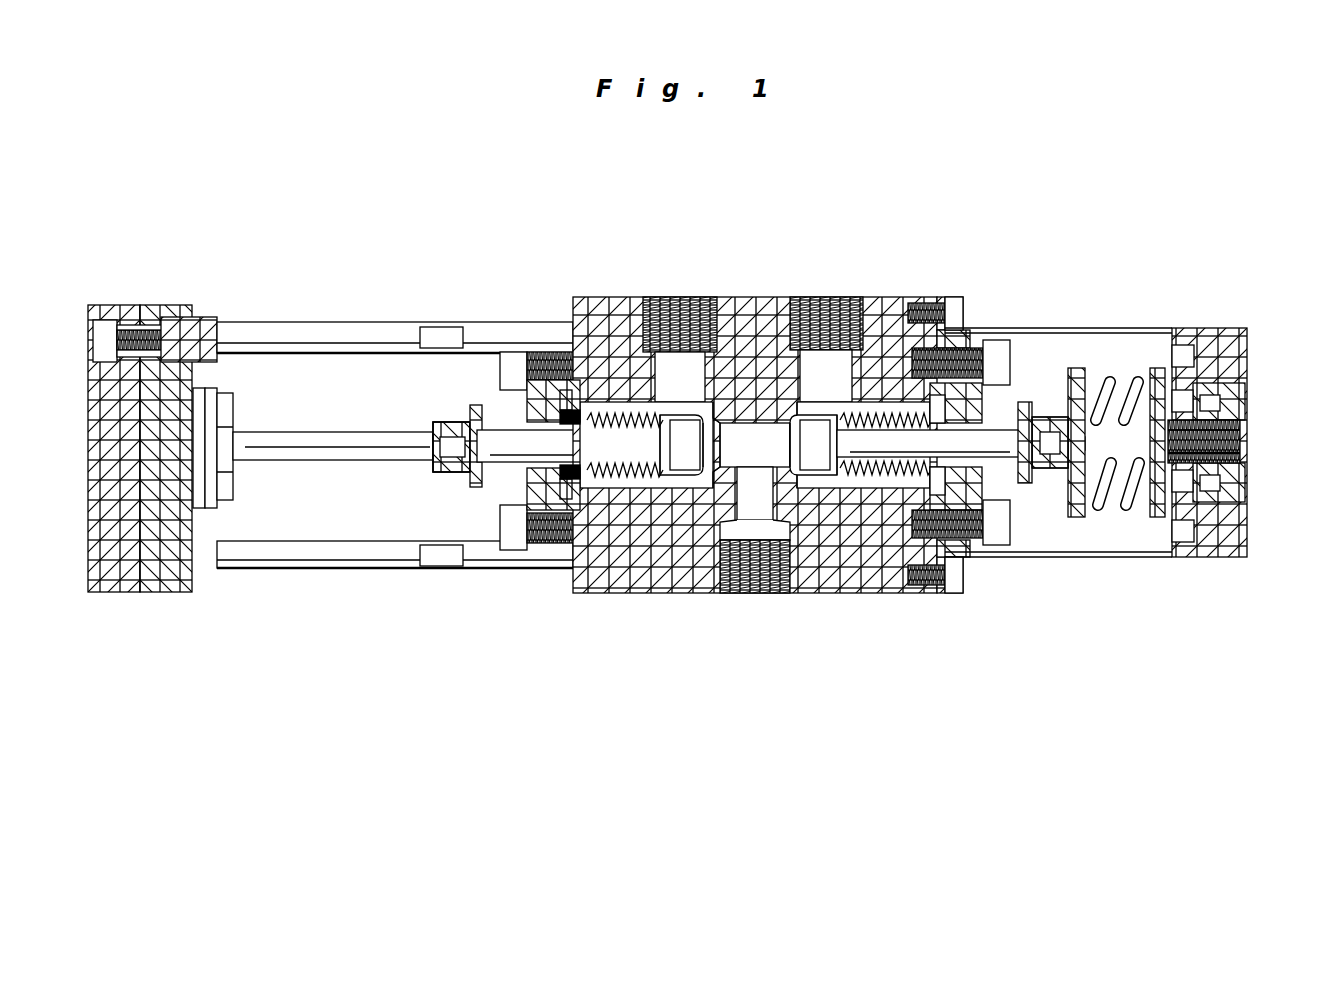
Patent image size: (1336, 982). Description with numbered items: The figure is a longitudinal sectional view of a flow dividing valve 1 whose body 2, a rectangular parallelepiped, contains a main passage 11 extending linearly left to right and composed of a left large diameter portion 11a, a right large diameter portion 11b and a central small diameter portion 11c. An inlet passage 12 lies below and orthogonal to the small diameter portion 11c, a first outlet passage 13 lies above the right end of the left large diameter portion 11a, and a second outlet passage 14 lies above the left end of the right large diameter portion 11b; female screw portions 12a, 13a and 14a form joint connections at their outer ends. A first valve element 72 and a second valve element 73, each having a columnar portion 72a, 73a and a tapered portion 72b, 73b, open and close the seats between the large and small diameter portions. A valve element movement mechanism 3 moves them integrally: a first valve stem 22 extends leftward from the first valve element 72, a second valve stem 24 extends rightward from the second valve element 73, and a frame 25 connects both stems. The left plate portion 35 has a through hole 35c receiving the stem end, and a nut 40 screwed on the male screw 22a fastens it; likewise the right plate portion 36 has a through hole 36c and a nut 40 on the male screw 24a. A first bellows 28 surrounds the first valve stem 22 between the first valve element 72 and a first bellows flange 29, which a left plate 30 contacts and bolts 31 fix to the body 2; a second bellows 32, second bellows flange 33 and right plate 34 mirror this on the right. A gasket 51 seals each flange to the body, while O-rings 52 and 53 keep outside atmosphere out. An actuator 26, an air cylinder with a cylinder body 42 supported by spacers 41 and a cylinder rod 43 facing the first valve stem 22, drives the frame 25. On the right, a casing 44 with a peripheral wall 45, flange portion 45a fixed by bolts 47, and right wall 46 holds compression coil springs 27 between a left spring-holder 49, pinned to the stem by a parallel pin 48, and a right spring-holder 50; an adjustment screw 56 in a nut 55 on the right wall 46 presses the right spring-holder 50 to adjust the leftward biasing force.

The flow dividing valve 1 is at (1178, 245).
The body 2 is at (748, 295).
The valve element movement mechanism 3 is at (160, 300).
The main passage 11 is at (640, 500).
The left large diameter portion 11a is at (712, 475).
The right large diameter portion 11b is at (805, 478).
The small diameter portion 11c is at (728, 470).
The inlet passage 12 is at (760, 525).
The female screw portion 12a is at (760, 575).
The first outlet passage 13 is at (648, 330).
The female screw portion 13a is at (690, 365).
The second outlet passage 14 is at (862, 330).
The female screw portion 14a is at (825, 372).
The first valve stem 22 is at (507, 443).
The male screw 22a is at (360, 432).
The second valve stem 24 is at (895, 460).
The male screw 24a is at (1090, 525).
The frame 25 is at (472, 395).
The actuator 26 is at (310, 418).
The compression coil spring 27 is at (1247, 372).
The first bellows 28 is at (620, 395).
The first bellows flange 29 is at (590, 390).
The left plate 30 is at (509, 352).
The bolts 31 is at (552, 512).
The second bellows 32 is at (925, 485).
The second bellows flange 33 is at (990, 558).
The right plate 34 is at (960, 395).
The left plate portion 35 is at (448, 420).
The through hole 35c is at (450, 474).
The right plate portion 36 is at (1030, 415).
The through hole 36c is at (1027, 485).
The nut 40 is at (455, 475).
The spacer 41 is at (246, 322).
The cylinder body 42 is at (162, 593).
The cylinder rod 43 is at (328, 447).
The casing 44 is at (1205, 328).
The peripheral wall 45 is at (1115, 328).
The flange portion 45a is at (942, 328).
The right wall 46 is at (1247, 340).
The bolts 47 is at (990, 340).
The parallel pin 48 is at (1247, 400).
The left spring-holder 49 is at (1080, 395).
The right spring-holder 50 is at (1168, 520).
The gasket 51 is at (605, 480).
The O-ring 52 is at (565, 480).
The O-ring 53 is at (562, 490).
The nut 55 is at (1247, 468).
The adjustment screw 56 is at (1242, 440).
The first valve element 72 is at (700, 428).
The columnar portion 72a is at (702, 415).
The tapered portion 72b is at (688, 478).
The second valve element 73 is at (805, 428).
The columnar portion 73a is at (812, 415).
The tapered portion 73b is at (835, 478).